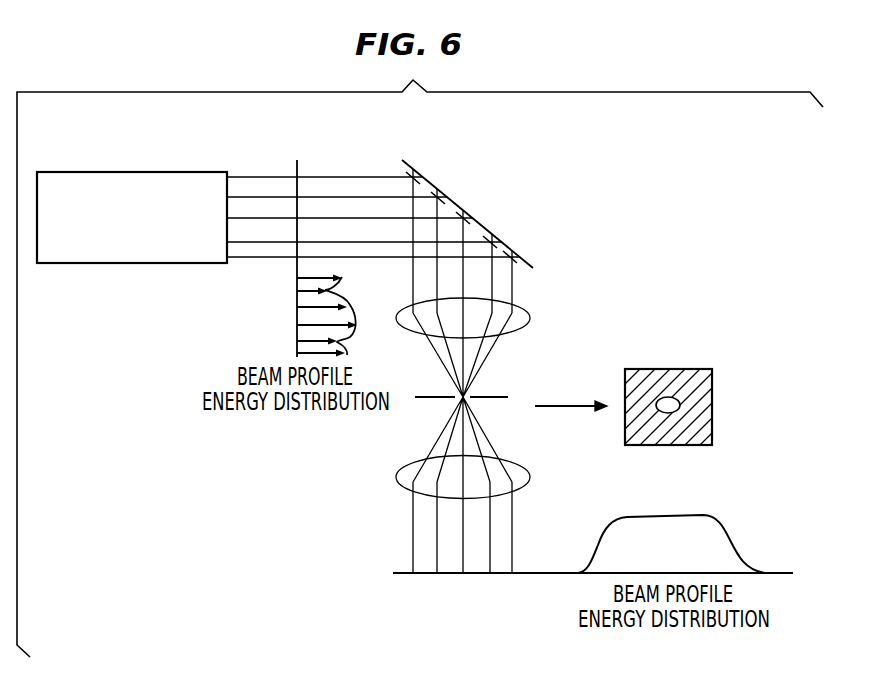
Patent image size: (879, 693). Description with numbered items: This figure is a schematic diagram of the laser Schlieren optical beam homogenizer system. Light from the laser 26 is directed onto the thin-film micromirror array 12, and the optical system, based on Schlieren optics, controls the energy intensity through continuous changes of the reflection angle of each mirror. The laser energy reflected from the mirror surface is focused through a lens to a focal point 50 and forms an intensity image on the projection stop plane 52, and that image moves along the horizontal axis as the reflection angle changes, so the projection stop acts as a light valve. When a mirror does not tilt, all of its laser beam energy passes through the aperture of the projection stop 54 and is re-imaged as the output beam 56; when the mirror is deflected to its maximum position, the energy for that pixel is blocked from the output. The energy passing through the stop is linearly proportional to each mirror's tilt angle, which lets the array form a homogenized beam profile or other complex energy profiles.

The laser 26 is at (130, 172).
The thin-film micromirror array 12 is at (457, 205).
The aperture / focal point 50 is at (497, 396).
The projection stop plane 52 is at (565, 407).
The aperture of the projection stop 54 is at (680, 405).
The output beam 56 is at (413, 550).